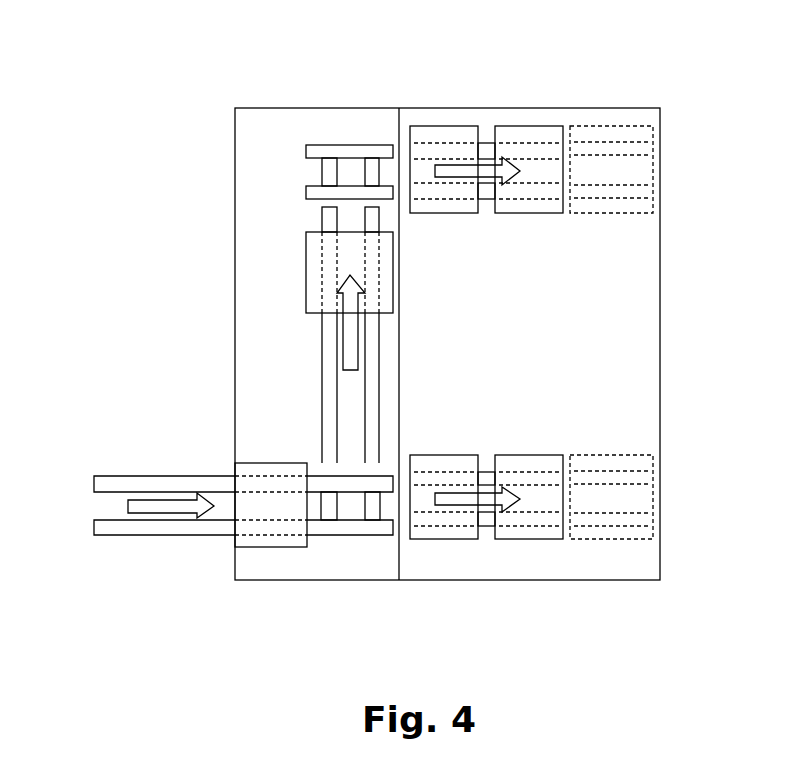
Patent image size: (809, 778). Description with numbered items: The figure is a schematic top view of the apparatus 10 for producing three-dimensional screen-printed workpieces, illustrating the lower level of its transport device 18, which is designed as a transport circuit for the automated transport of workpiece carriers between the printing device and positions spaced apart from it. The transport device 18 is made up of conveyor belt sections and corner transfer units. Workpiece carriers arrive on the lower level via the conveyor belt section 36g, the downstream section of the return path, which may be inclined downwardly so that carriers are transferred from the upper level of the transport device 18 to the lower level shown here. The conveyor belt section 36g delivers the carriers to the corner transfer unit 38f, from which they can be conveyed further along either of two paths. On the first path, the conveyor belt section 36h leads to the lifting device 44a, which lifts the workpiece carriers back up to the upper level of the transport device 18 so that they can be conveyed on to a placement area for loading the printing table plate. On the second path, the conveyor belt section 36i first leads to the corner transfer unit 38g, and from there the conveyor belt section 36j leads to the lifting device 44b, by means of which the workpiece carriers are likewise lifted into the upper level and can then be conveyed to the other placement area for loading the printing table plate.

The apparatus 10 is at (128, 126).
The transport device 18 is at (163, 448).
The conveyor belt section 36g is at (112, 508).
The conveyor belt section 36h is at (485, 518).
The conveyor belt section 36i is at (328, 335).
The conveyor belt section 36j is at (483, 145).
The corner transfer unit 38f is at (352, 507).
The corner transfer unit 38g is at (354, 157).
The lifting device 44a is at (630, 500).
The lifting device 44b is at (630, 170).